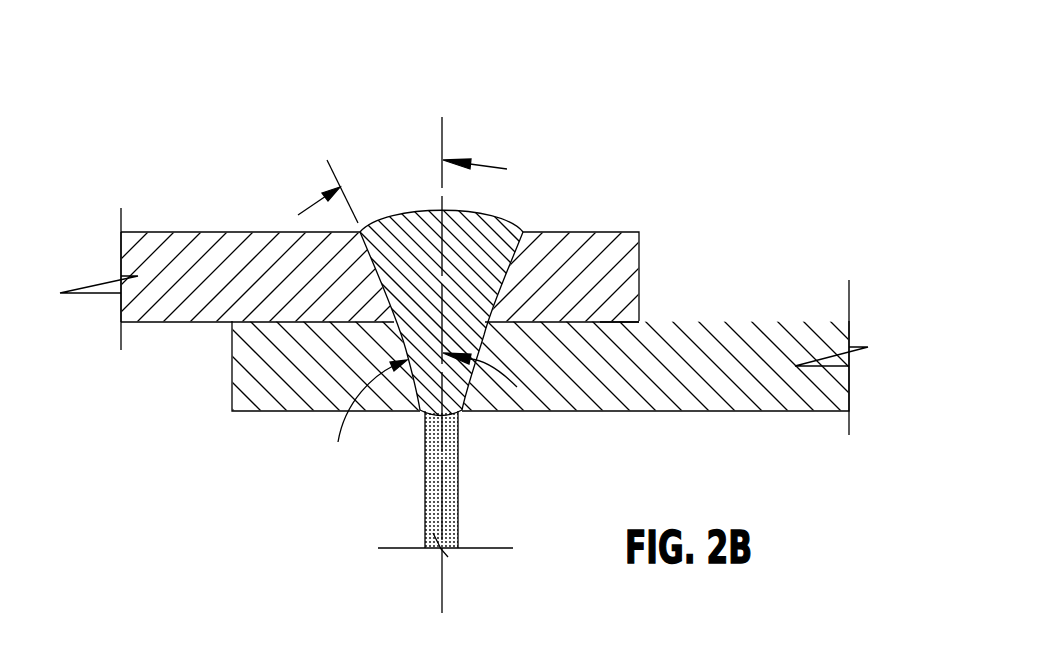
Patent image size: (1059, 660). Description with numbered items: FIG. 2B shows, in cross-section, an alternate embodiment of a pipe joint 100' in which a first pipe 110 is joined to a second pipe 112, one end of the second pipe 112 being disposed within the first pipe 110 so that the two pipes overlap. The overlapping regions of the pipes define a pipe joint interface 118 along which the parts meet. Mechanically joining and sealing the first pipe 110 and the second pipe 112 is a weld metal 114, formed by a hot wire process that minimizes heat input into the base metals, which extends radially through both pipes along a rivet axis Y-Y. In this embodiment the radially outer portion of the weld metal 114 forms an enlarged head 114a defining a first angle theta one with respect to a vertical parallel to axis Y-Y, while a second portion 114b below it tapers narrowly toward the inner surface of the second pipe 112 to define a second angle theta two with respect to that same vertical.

The pipe joint 100' is at (462, 352).
The first pipe 110 is at (193, 232).
The second pipe 112 is at (758, 321).
The weld metal 114 is at (495, 222).
The enlarged head 114a is at (483, 265).
The second portion 114b is at (452, 388).
The pipe joint interface 118 is at (607, 322).